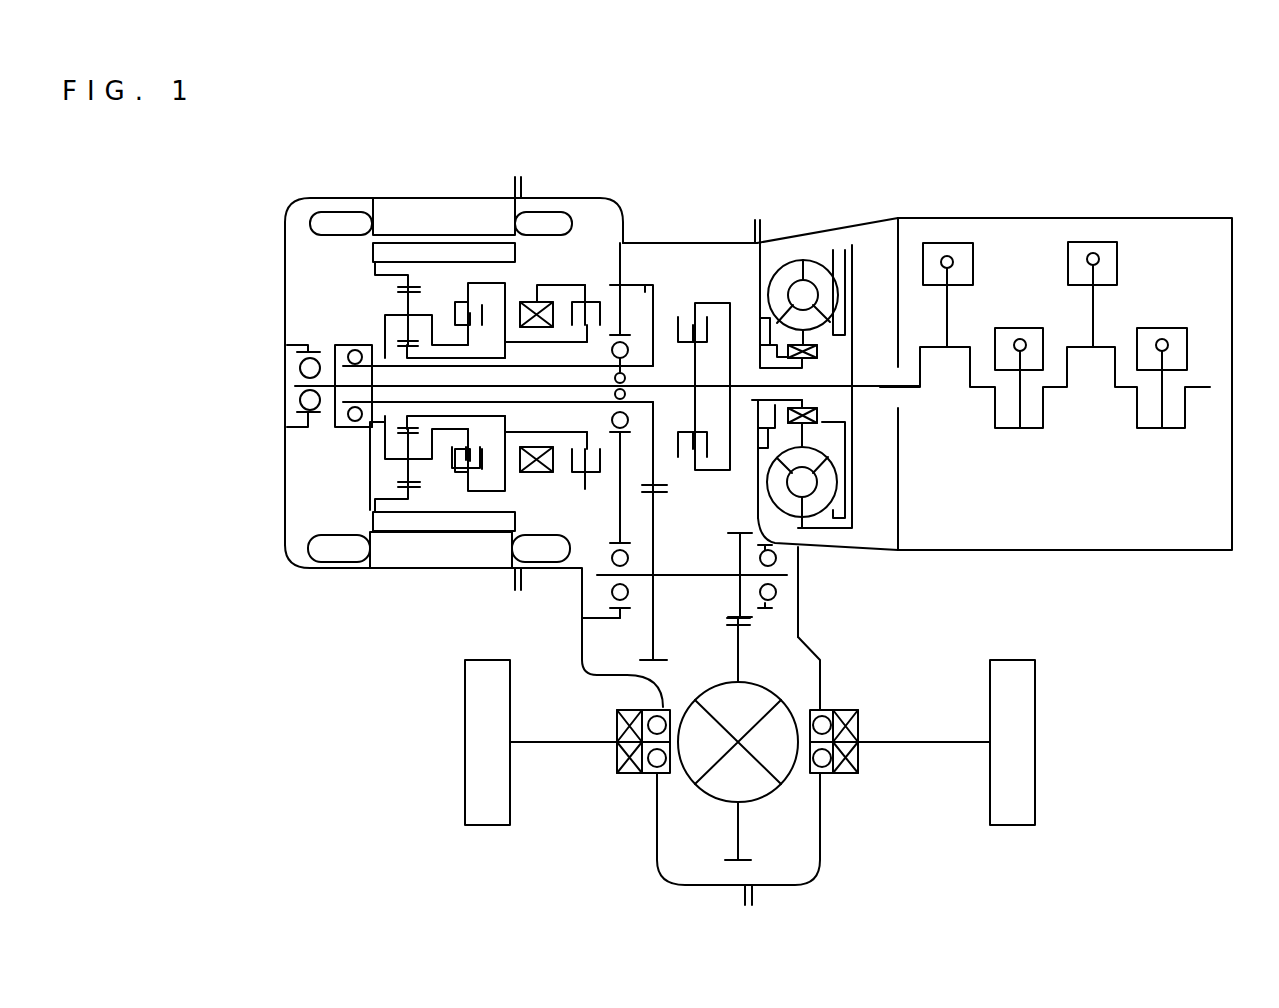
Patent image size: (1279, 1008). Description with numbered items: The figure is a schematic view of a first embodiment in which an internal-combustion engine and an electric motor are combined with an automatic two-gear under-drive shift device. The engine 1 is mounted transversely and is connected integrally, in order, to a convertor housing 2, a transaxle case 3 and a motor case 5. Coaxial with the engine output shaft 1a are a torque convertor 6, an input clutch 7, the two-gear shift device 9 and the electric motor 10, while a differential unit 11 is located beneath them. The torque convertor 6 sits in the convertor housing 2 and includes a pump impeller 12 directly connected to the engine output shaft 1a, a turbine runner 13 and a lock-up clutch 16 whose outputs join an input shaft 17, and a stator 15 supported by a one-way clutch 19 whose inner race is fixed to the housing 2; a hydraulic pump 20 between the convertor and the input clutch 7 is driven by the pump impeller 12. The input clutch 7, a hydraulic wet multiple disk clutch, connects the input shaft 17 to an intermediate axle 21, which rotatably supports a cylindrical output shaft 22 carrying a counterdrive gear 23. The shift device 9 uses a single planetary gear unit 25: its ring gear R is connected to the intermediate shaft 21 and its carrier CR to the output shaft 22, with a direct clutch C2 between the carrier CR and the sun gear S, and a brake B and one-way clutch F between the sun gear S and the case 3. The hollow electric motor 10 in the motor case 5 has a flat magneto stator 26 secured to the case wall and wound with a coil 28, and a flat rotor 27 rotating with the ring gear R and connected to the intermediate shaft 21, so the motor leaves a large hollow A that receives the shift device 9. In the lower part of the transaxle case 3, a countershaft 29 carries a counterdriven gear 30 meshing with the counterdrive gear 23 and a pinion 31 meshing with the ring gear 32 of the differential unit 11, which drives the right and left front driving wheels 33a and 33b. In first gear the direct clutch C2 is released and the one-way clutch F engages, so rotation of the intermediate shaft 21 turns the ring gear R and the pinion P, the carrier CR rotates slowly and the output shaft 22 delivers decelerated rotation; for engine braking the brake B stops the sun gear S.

The engine 1 is at (1070, 208).
The engine output shaft 1a is at (903, 395).
The convertor housing 2 is at (867, 258).
The transaxle case 3 is at (655, 283).
The motor case 5 is at (343, 198).
The torque convertor 6 is at (785, 236).
The input clutch 7 is at (697, 303).
The two-gear shift device 9 is at (553, 275).
The electric motor 10 is at (450, 188).
The differential unit 11 is at (806, 695).
The pump impeller 12 is at (778, 283).
The turbine runner 13 is at (812, 262).
The stator 15 is at (812, 318).
The lock-up clutch 16 is at (897, 262).
The input shaft 17 is at (735, 300).
The one-way clutch 19 is at (852, 346).
The hydraulic pump 20 is at (760, 423).
The intermediate axle 21 is at (368, 346).
The output shaft 22 is at (365, 425).
The counterdrive gear 23 is at (624, 240).
The planetary gear unit 25 is at (305, 266).
The magneto stator 26 is at (398, 568).
The rotor 27 is at (440, 531).
The coil 28 is at (328, 568).
The countershaft 29 is at (695, 578).
The counterdriven gear 30 is at (650, 637).
The pinion 31 is at (738, 553).
The ring gear 32 is at (745, 650).
The front driving wheel 33a is at (478, 775).
The front driving wheel 33b is at (1030, 775).
The ring gear R is at (396, 262).
The sun gear S is at (405, 343).
The direct clutch C2 is at (485, 300).
The one-way clutch F is at (530, 302).
The brake B is at (585, 290).
The hollow A is at (524, 512).
The carrier CR is at (395, 475).
The pinion P is at (388, 488).